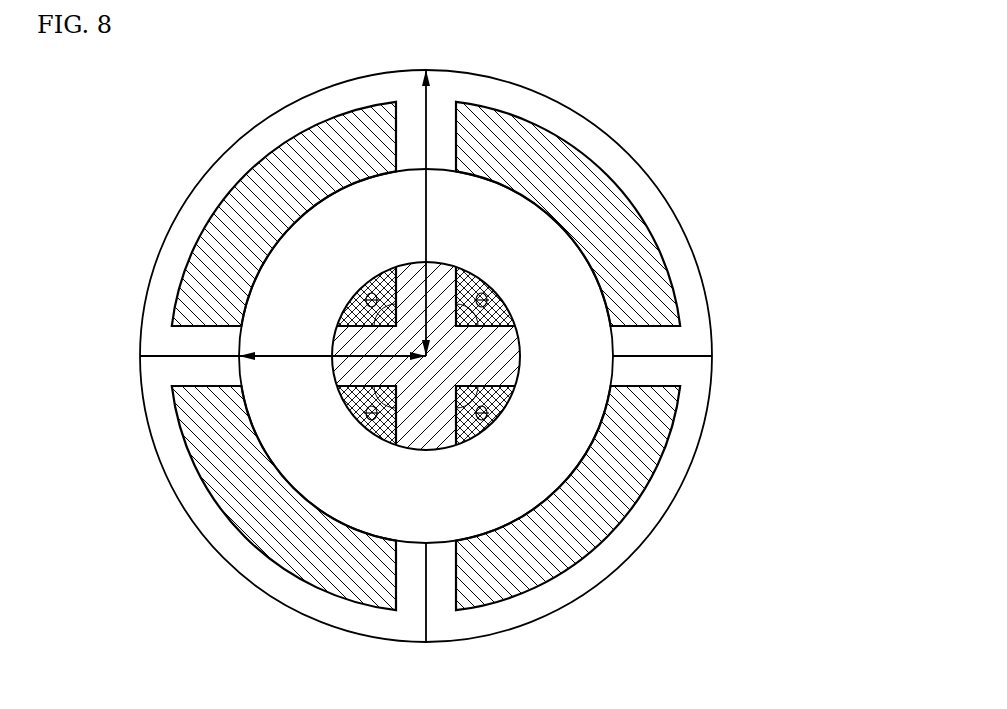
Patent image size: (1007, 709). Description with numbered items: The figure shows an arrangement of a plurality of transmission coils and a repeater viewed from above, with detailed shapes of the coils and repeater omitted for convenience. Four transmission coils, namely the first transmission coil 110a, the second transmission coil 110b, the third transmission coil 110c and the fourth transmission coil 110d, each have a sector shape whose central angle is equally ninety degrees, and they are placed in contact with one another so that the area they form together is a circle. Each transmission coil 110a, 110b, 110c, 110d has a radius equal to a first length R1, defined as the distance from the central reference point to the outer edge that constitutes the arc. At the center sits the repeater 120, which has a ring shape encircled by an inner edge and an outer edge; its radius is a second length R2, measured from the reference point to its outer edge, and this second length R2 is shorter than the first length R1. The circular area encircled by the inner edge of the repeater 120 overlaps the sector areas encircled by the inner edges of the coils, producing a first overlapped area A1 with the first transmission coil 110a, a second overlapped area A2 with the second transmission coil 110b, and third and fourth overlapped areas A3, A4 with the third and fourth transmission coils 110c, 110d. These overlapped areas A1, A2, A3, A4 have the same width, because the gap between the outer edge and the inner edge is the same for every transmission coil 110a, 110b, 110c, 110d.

The first transmission coil 110a is at (190, 229).
The second transmission coil 110b is at (660, 229).
The third transmission coil 110c is at (190, 482).
The fourth transmission coil 110d is at (660, 483).
The repeater 120 is at (590, 343).
The first overlapped area A1 is at (345, 308).
The second overlapped area A2 is at (500, 316).
The third overlapped area A3 is at (345, 402).
The fourth overlapped area A4 is at (495, 398).
The first length R1 is at (413, 213).
The second length R2 is at (332, 344).